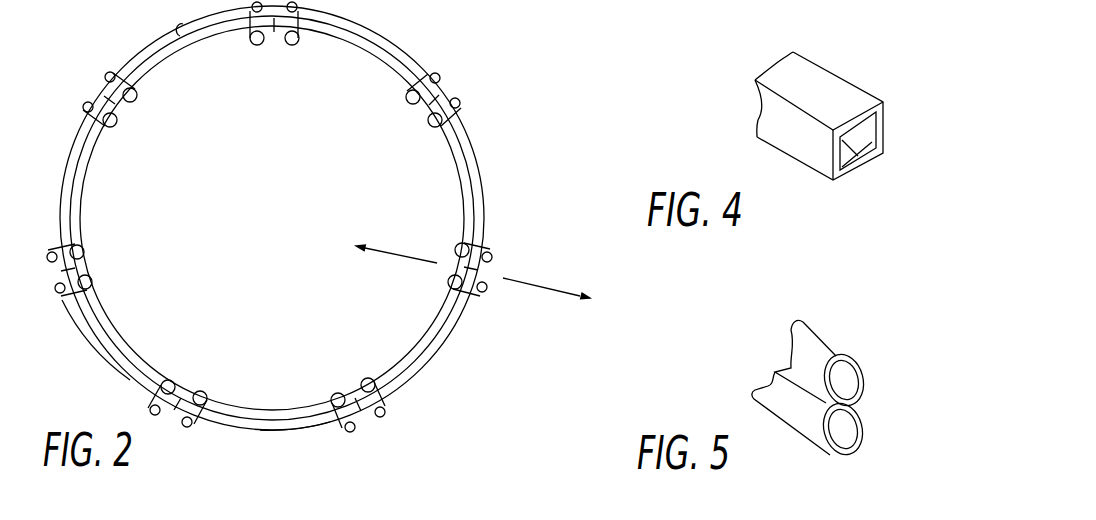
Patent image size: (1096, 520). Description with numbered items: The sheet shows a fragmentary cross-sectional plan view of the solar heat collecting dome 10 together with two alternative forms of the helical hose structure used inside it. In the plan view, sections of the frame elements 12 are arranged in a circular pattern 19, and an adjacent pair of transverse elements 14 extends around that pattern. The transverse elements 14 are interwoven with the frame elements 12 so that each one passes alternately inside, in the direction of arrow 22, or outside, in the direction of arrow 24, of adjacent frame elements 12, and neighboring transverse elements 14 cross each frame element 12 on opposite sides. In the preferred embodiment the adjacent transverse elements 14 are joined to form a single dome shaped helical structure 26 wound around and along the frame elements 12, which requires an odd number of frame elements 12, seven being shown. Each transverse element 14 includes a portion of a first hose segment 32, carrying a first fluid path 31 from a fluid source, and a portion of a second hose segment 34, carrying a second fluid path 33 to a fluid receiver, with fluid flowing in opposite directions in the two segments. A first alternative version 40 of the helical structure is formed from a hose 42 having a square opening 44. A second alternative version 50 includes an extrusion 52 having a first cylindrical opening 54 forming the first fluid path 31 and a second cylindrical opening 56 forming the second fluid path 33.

In FIG. 2, the solar heat collecting dome 10 is at (78, 86).
In FIG. 2, the frame elements 12 is at (197, 422).
In FIG. 2, the transverse elements 14 is at (105, 309).
In FIG. 2, the circular pattern 19 is at (440, 405).
In FIG. 2, the arrow 22 is at (402, 255).
In FIG. 2, the arrow 24 is at (548, 282).
In FIG. 2, the dome shaped helical structure 26 is at (478, 151).
In FIG. 2, the first hose segment 32 is at (306, 406).
In FIG. 2, the second hose segment 34 is at (322, 427).
In FIG. 4, the first alternative version 40 is at (775, 150).
In FIG. 4, the hose 42 is at (811, 175).
In FIG. 4, the square opening 44 is at (862, 160).
In FIG. 5, the second alternative version 50 is at (807, 373).
In FIG. 5, the extrusion 52 is at (848, 332).
In FIG. 5, the first cylindrical opening 54 is at (870, 359).
In FIG. 5, the first fluid path 31 is at (871, 378).
In FIG. 5, the second cylindrical opening 56 is at (866, 424).
In FIG. 5, the second fluid path 33 is at (858, 441).